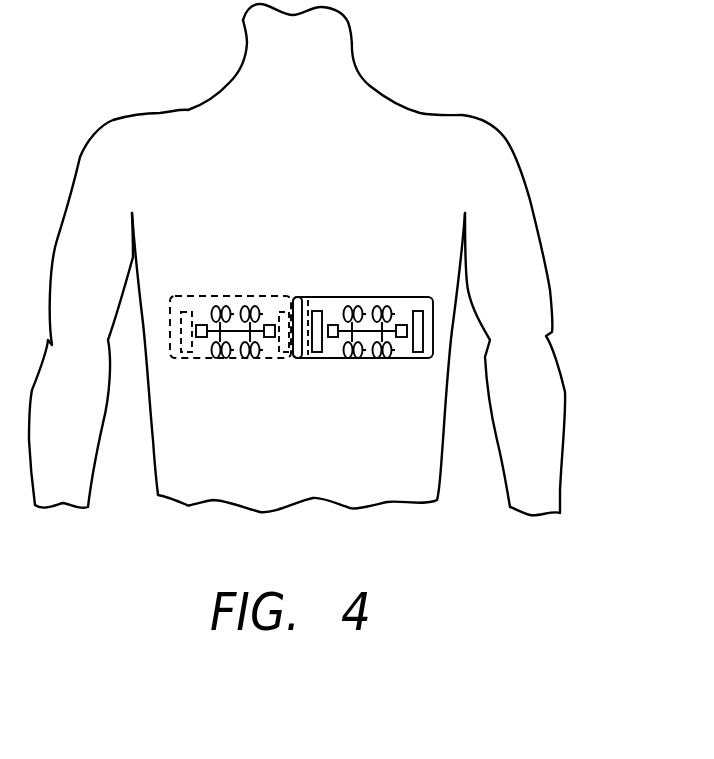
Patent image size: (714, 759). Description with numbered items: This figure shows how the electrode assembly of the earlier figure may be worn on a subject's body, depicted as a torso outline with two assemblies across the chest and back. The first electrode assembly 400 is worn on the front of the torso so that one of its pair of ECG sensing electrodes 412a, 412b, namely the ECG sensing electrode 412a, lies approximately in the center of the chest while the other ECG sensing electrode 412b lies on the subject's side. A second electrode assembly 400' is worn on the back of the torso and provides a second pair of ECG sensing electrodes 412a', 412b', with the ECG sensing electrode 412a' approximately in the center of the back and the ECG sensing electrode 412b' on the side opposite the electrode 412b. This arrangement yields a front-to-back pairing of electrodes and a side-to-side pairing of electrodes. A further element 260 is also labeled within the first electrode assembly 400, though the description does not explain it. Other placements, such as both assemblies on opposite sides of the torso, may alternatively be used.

The electrode assembly 400 is at (403, 303).
The second electrode assembly 400' is at (198, 302).
The ECG sensing electrode 412a is at (359, 267).
The ECG sensing electrode 412b is at (463, 267).
The ECG sensing electrode 412a' is at (249, 266).
The ECG sensing electrode 412b' is at (149, 266).
The sensor 260 is at (389, 312).